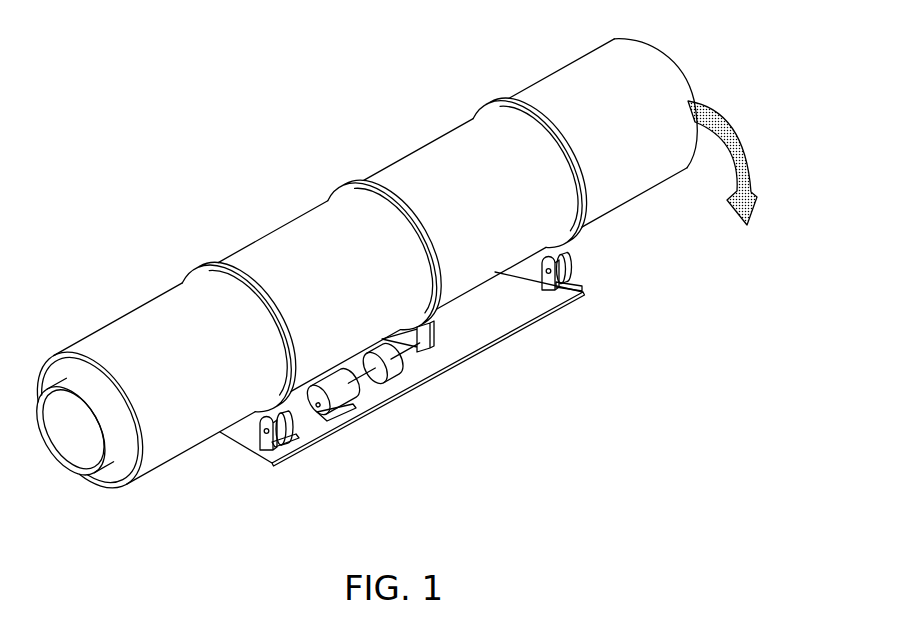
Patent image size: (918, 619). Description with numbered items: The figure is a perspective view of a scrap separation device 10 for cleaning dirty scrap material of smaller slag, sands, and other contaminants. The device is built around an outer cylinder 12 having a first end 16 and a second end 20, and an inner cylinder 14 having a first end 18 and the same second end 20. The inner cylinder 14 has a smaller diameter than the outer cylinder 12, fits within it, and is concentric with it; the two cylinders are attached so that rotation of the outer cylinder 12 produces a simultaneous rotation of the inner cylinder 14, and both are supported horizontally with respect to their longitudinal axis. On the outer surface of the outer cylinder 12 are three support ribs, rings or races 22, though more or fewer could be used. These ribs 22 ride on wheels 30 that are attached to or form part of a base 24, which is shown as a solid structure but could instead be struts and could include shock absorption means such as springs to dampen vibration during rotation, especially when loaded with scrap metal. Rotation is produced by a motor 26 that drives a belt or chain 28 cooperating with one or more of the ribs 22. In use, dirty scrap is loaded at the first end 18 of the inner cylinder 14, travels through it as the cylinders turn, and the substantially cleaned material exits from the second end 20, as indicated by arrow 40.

The scrap separation device 10 is at (92, 138).
The outer cylinder 12 is at (190, 378).
The inner cylinder 14 is at (82, 445).
The first end 16 is at (113, 483).
The first end 18 is at (58, 466).
The second end 20 is at (672, 68).
The support ribs 22 is at (210, 264).
The base 24 is at (490, 322).
The motor 26 is at (340, 417).
The belt or chain 28 is at (428, 350).
The wheels 30 is at (281, 447).
The arrow 40 is at (733, 220).